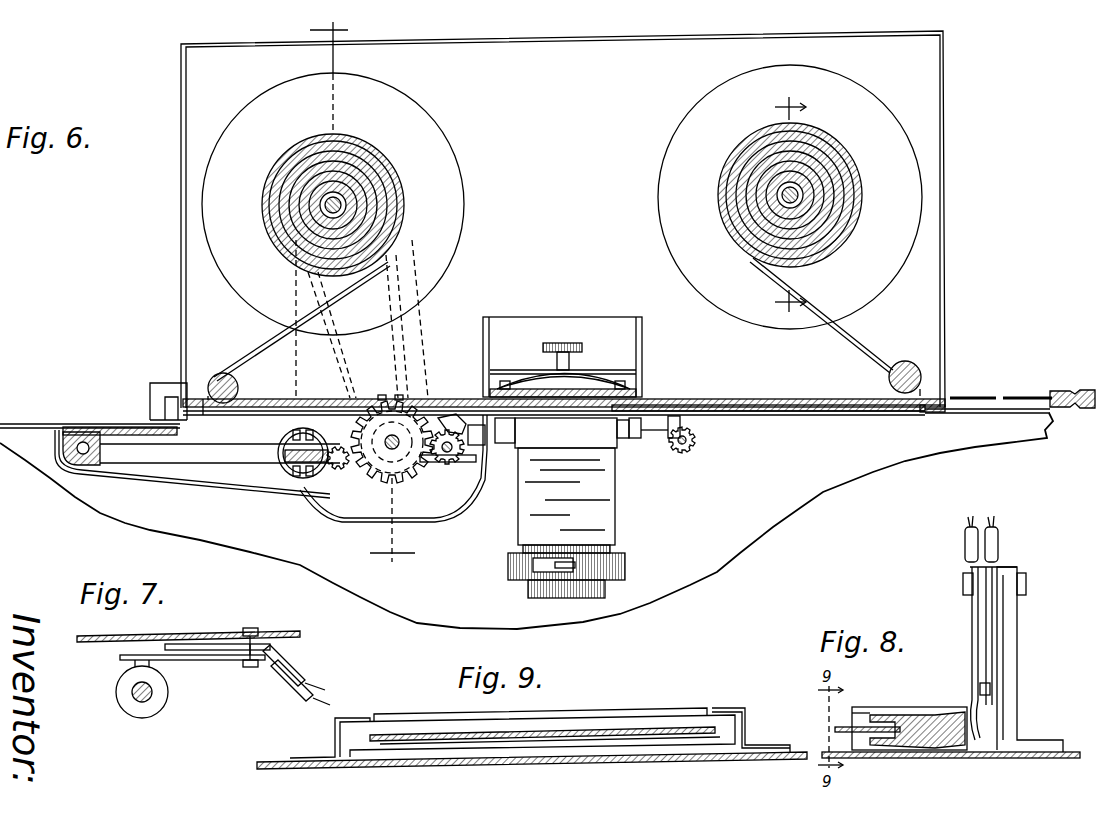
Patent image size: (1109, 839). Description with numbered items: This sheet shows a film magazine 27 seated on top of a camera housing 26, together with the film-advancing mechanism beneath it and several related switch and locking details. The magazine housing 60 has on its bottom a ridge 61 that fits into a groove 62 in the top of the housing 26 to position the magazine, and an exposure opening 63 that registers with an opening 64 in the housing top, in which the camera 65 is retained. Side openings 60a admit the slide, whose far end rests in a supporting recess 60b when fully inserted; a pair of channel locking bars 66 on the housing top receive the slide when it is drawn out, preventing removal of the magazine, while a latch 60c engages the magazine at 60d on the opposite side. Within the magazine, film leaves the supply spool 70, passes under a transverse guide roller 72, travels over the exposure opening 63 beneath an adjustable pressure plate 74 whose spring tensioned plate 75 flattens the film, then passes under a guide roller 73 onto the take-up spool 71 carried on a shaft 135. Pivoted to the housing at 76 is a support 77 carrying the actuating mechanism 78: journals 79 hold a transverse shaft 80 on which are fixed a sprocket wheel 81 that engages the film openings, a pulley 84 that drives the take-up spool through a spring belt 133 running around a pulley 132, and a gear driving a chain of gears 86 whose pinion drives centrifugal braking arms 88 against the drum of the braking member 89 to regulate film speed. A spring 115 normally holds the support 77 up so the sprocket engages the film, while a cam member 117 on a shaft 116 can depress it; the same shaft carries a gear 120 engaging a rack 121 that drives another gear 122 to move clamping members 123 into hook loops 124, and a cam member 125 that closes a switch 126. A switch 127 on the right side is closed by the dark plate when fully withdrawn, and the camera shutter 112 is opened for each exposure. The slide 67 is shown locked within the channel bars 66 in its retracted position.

In FIG. 6, the housing 26 is at (772, 527).
In FIG. 9, the housing 26 is at (790, 760).
In FIG. 8, the housing 26 is at (958, 758).
In FIG. 6, the magazine 27 is at (632, 33).
In FIG. 6, the magazine housing 60 is at (530, 38).
In FIG. 6, the side openings 60a is at (950, 403).
In FIG. 6, the supporting recess 60b is at (325, 399).
In FIG. 6, the latch 60c is at (160, 390).
In FIG. 6, the magazine engagement point 60d is at (175, 397).
In FIG. 6, the ridge 61 is at (203, 399).
In FIG. 6, the groove 62 is at (917, 414).
In FIG. 6, the exposure opening 63 is at (566, 433).
In FIG. 6, the opening 64 is at (600, 414).
In FIG. 6, the camera 65 is at (618, 509).
In FIG. 9, the channel locking bars 66 is at (338, 731).
In FIG. 8, the channel locking bars 66 is at (873, 707).
In FIG. 6, the slide bar 67 is at (1045, 396).
In FIG. 9, the slide bar 67 is at (552, 733).
In FIG. 8, the slide bar 67 is at (838, 727).
In FIG. 6, the film spool 70 is at (708, 97).
In FIG. 6, the take-up spool 71 is at (413, 108).
In FIG. 6, the transverse guide roller 72 is at (890, 372).
In FIG. 6, the guide roller 73 is at (239, 383).
In FIG. 6, the adjustable pressure plate 74 is at (599, 365).
In FIG. 6, the adjustable spring tensioned plate 75 is at (542, 386).
In FIG. 6, the pivot 76 is at (82, 425).
In FIG. 6, the support 77 is at (170, 468).
In FIG. 6, the actuating mechanism 78 is at (442, 494).
In FIG. 6, the journals 79 is at (383, 399).
In FIG. 6, the transverse shaft 80 is at (389, 450).
In FIG. 6, the sprocket wheel 81 is at (405, 480).
In FIG. 6, the pulley 84 is at (390, 500).
In FIG. 6, the chain of gears 86 is at (345, 498).
In FIG. 6, the centrifugal acting braking arms 88 is at (305, 472).
In FIG. 6, the braking member 89 is at (285, 462).
In FIG. 6, the shutter 112 is at (572, 570).
In FIG. 6, the spring 115 is at (337, 470).
In FIG. 6, the shaft 116 is at (452, 463).
In FIG. 7, the shaft 116 is at (152, 694).
In FIG. 6, the cam member 117 is at (449, 414).
In FIG. 6, the gear 120 is at (456, 449).
In FIG. 6, the rack 121 is at (659, 440).
In FIG. 6, the gear 122 is at (692, 452).
In FIG. 6, the clamping members 123 is at (700, 438).
In FIG. 6, the hook loops 124 is at (683, 418).
In FIG. 7, the cam member 125 is at (145, 712).
In FIG. 7, the switch 126 is at (226, 630).
In FIG. 8, the switch 127 is at (1020, 638).
In FIG. 6, the pulley 132 is at (293, 152).
In FIG. 6, the spring belt 133 is at (412, 347).
In FIG. 6, the shaft 135 is at (345, 205).